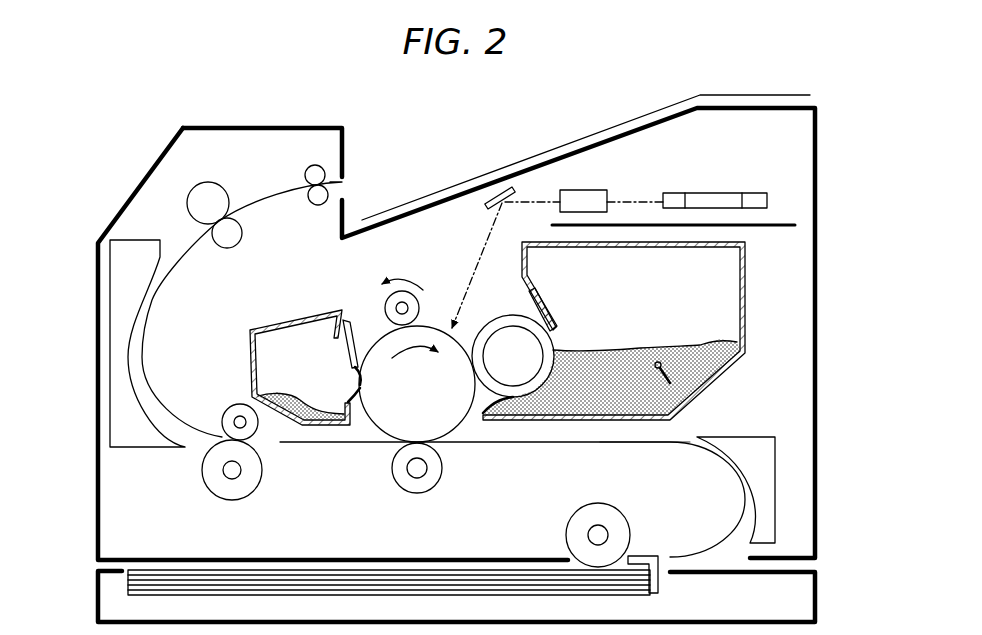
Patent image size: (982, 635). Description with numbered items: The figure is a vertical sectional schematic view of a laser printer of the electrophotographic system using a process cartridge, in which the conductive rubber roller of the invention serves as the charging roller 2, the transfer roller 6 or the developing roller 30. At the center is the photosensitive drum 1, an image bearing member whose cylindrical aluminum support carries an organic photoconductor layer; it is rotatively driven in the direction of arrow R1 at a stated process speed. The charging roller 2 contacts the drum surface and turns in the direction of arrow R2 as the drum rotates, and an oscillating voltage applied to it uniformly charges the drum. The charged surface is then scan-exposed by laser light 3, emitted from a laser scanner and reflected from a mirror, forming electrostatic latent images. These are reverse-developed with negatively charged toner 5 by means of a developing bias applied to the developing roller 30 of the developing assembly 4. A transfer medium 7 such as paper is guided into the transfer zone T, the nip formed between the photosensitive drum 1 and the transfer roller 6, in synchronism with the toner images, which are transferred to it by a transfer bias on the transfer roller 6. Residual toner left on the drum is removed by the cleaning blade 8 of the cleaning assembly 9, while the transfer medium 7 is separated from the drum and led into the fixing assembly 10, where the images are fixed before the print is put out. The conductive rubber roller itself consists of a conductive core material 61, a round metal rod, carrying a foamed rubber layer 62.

The photosensitive drum 1 is at (377, 408).
The charging roller 2 is at (385, 310).
The laser light 3 is at (479, 252).
The developing assembly 4 is at (692, 393).
The toner 5 is at (608, 358).
The transfer roller 6 is at (433, 494).
The conductive core material 61 is at (410, 475).
The foamed rubber layer 62 is at (445, 468).
The transfer medium 7 is at (602, 443).
The cleaning blade 8 is at (353, 378).
The cleaning assembly 9 is at (237, 358).
The fixing assembly 10 is at (195, 457).
The developing roller 30 is at (507, 317).
The transfer zone T is at (393, 453).
The rotation direction of photosensitive drum R1 is at (415, 362).
The rotation direction of charging roller R2 is at (402, 273).